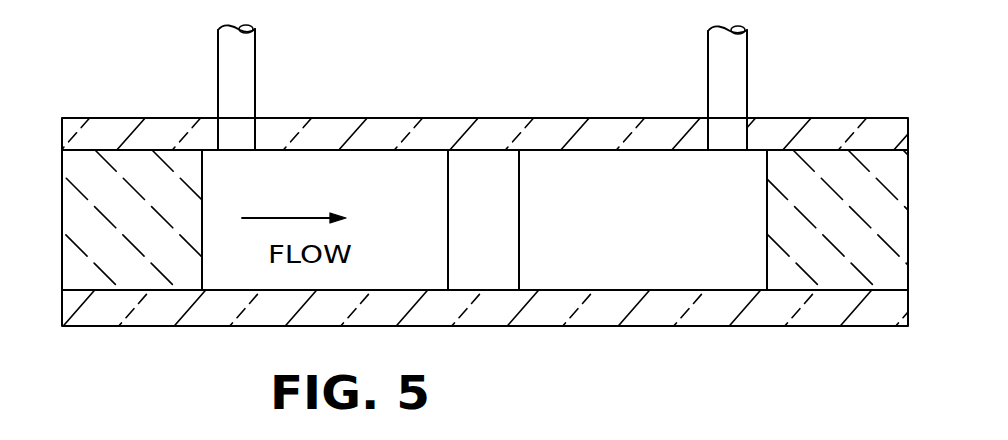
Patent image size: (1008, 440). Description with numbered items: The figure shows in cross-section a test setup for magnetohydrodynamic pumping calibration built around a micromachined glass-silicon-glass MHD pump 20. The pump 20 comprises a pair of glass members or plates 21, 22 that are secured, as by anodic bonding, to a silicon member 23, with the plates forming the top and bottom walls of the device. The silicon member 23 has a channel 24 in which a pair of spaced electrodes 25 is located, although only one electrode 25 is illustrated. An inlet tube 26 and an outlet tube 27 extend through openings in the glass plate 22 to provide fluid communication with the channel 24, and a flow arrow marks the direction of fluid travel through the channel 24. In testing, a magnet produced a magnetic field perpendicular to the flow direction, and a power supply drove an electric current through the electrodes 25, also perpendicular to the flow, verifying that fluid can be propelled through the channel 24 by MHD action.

The MHD pump 20 is at (379, 80).
The glass member or plate 21 is at (578, 327).
The glass member or plate 22 is at (573, 120).
The silicon member 23 is at (139, 273).
The channel 24 is at (668, 225).
The electrodes 25 is at (492, 154).
The inlet tube 26 is at (217, 77).
The outlet tube 27 is at (747, 72).